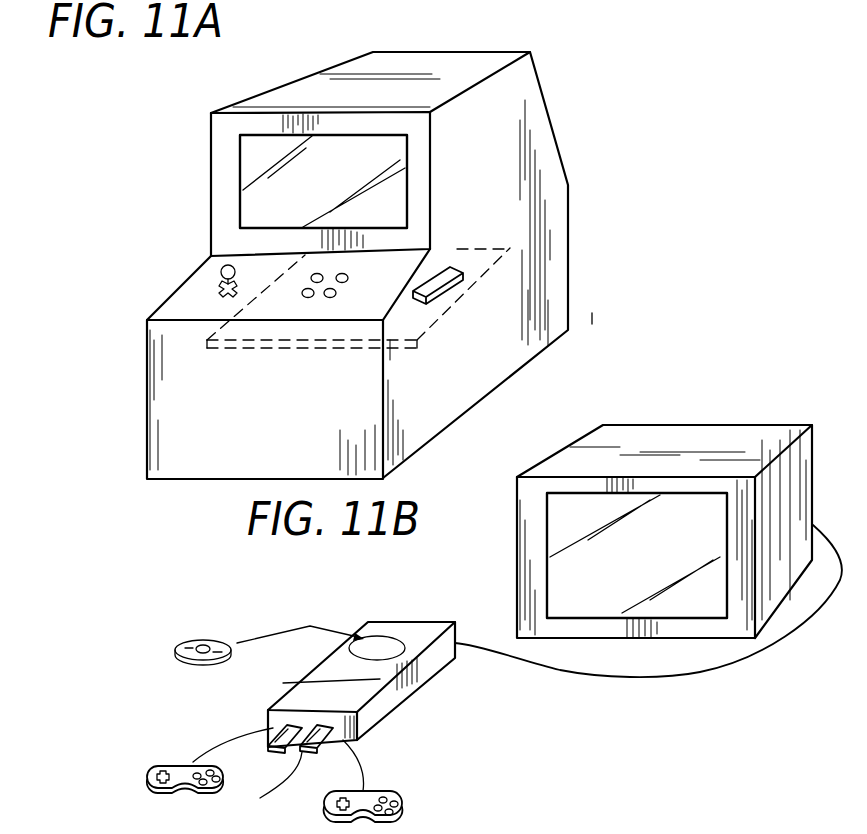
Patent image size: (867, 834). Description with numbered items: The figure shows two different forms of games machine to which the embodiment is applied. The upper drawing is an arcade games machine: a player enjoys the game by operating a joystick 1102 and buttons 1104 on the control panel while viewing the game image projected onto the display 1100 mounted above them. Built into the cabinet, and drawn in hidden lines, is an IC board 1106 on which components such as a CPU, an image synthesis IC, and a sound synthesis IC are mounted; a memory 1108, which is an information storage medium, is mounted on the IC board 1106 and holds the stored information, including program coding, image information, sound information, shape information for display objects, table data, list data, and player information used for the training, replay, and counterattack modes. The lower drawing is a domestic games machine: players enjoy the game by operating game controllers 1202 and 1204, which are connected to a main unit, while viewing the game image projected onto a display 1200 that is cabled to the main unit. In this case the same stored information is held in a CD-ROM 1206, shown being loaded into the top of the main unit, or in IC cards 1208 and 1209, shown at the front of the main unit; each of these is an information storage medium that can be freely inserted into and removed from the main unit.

In FIG. 11A, the display 1100 is at (260, 167).
In FIG. 11A, the joystick 1102 is at (221, 272).
In FIG. 11A, the buttons 1104 is at (314, 300).
In FIG. 11A, the IC board 1106 is at (433, 327).
In FIG. 11A, the memory 1108 is at (461, 289).
In FIG. 11B, the display 1200 is at (580, 563).
In FIG. 11B, the game controller 1202 is at (145, 786).
In FIG. 11B, the game controller 1204 is at (402, 807).
In FIG. 11B, the CD-ROM 1206 is at (197, 640).
In FIG. 11B, the IC card 1208 is at (278, 728).
In FIG. 11B, the IC card 1209 is at (260, 793).